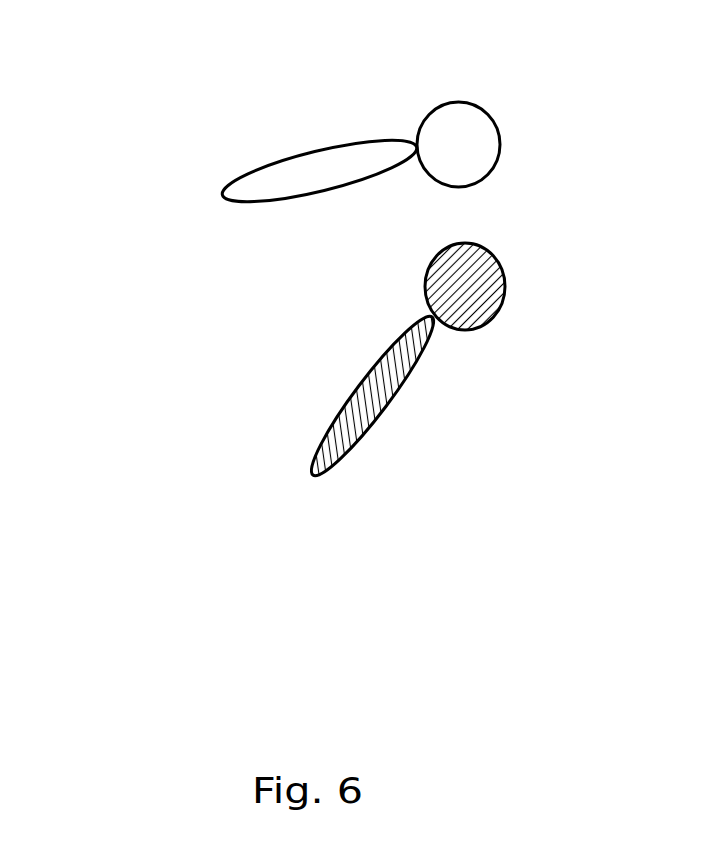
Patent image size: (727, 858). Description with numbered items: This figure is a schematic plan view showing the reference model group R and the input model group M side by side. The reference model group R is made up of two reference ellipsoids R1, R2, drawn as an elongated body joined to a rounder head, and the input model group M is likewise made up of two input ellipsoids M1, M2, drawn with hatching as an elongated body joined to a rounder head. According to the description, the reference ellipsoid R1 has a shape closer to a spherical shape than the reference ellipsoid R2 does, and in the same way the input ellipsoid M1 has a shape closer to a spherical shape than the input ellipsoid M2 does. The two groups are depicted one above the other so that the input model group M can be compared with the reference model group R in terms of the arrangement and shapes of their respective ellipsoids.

The reference model group R is at (277, 126).
The reference ellipsoid R1 is at (323, 162).
The reference ellipsoid R2 is at (465, 120).
The input model group M is at (344, 373).
The input ellipsoid M1 is at (375, 407).
The input ellipsoid M2 is at (490, 310).